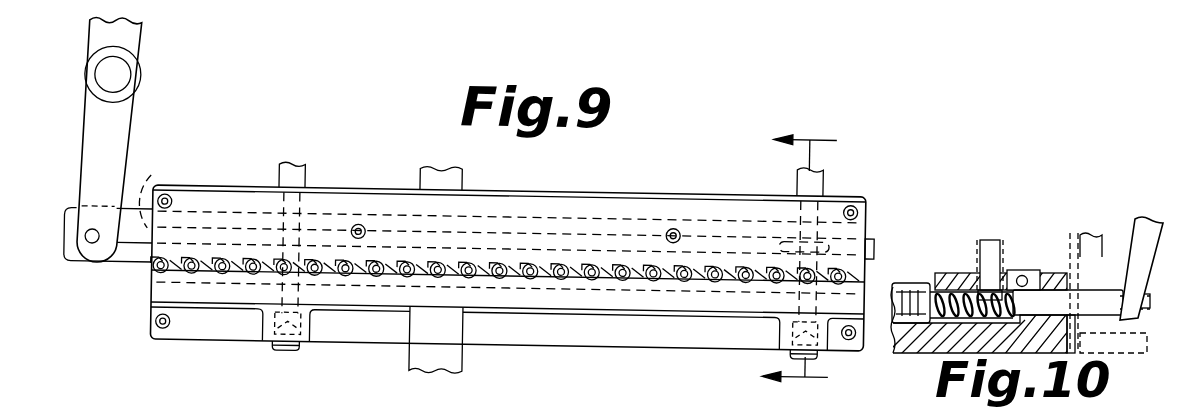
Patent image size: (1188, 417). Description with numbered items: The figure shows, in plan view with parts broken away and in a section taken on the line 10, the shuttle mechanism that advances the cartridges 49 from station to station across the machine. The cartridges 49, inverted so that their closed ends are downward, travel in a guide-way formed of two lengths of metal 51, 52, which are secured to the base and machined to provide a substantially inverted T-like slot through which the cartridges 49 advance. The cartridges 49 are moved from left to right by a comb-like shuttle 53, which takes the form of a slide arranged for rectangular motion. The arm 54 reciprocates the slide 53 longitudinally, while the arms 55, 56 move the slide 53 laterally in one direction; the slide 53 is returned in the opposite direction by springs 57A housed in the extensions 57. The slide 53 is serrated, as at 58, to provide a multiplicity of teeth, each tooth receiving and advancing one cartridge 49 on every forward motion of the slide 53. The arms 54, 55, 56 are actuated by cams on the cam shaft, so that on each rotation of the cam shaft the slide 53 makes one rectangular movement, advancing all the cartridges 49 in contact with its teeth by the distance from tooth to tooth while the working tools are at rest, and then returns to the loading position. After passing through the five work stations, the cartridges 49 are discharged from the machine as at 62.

In FIG. 9, the section line 10 is at (799, 259).
In FIG. 9, the cartridge 49 is at (194, 268).
In FIG. 10, the cartridge 49 is at (1000, 245).
In FIG. 9, the length of metal 51 is at (165, 287).
In FIG. 10, the length of metal 51 is at (968, 273).
In FIG. 9, the length of metal 52 is at (158, 191).
In FIG. 10, the length of metal 52 is at (1055, 268).
In FIG. 9, the comb-like shuttle 53 is at (136, 250).
In FIG. 10, the comb-like shuttle 53 is at (1027, 280).
In FIG. 9, the arm 54 is at (139, 113).
In FIG. 9, the arm 55 is at (302, 161).
In FIG. 9, the arm 56 is at (807, 172).
In FIG. 10, the arm 56 is at (1143, 242).
In FIG. 9, the extension 57 is at (307, 288).
In FIG. 10, the extension 57 is at (1095, 308).
In FIG. 10, the spring 57A is at (911, 293).
In FIG. 9, the serrations 58 is at (214, 258).
In FIG. 9, the discharge point 62 is at (868, 265).